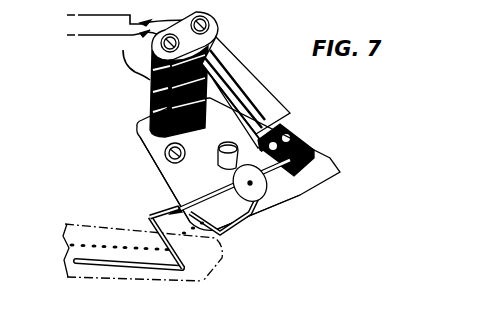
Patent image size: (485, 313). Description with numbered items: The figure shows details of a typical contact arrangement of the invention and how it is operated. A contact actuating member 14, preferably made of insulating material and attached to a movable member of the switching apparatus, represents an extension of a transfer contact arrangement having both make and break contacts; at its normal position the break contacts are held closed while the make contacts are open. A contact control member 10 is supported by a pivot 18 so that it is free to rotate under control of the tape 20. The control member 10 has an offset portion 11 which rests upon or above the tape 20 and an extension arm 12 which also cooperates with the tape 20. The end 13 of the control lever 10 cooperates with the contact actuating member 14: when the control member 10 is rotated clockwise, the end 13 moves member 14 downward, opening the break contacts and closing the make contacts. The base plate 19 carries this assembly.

The contact control member 10 is at (167, 212).
The offset portion 11 is at (155, 237).
The extension arm 12 is at (134, 268).
The extension of control member 13 is at (273, 165).
The contact actuating member 14 is at (305, 140).
The pivot 18 is at (258, 208).
The base plate 19 is at (140, 143).
The tape 20 is at (85, 226).